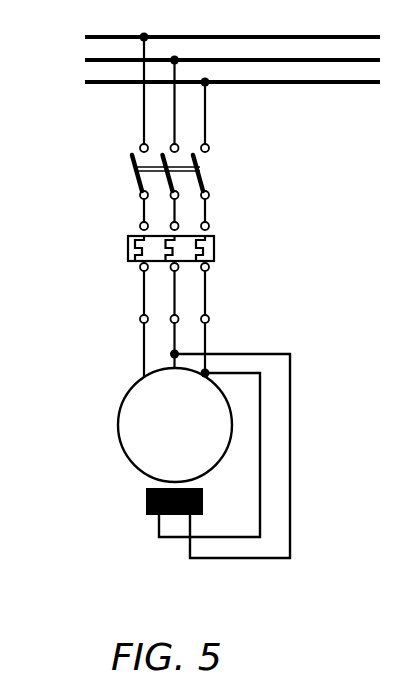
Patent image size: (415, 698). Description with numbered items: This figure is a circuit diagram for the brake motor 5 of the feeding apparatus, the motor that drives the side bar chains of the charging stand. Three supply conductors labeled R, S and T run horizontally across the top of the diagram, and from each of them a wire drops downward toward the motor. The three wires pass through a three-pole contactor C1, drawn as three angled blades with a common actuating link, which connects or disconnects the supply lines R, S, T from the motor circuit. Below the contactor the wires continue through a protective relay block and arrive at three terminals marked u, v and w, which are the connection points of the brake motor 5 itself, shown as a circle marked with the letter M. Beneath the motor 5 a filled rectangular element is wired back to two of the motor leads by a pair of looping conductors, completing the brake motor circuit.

The brake motor 5 is at (118, 427).
The contactor C1 is at (195, 171).
The supply line R is at (216, 29).
The supply line S is at (216, 56).
The supply line T is at (216, 83).
The motor terminal u is at (130, 342).
The motor terminal v is at (165, 337).
The motor terminal w is at (195, 342).